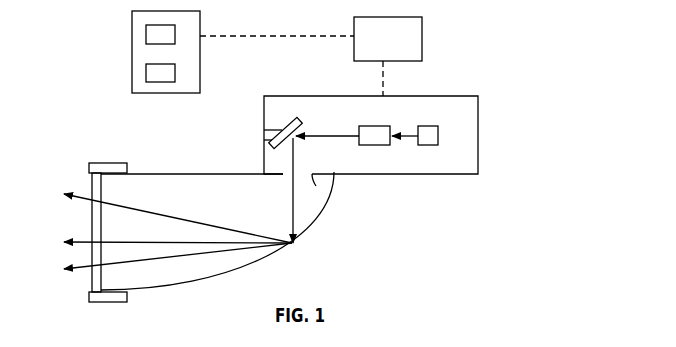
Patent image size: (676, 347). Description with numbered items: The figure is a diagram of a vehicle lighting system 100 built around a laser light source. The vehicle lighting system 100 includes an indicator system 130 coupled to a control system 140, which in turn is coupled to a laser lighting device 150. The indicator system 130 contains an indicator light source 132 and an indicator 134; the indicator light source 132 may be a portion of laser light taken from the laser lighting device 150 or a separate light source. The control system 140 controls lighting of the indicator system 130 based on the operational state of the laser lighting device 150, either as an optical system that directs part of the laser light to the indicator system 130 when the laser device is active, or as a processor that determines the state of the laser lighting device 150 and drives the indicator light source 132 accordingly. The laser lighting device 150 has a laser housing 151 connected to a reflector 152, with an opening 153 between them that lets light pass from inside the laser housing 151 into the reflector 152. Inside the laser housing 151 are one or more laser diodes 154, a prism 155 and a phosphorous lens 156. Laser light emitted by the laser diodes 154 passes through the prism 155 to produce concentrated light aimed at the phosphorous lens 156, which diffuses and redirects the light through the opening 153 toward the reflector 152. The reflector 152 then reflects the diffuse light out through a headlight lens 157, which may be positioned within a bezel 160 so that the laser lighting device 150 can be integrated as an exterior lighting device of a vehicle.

The vehicle lighting system 100 is at (533, 65).
The indicator system 130 is at (132, 72).
The indicator light source 132 is at (176, 26).
The indicator 134 is at (176, 64).
The control system 140 is at (423, 38).
The laser lighting device 150 is at (531, 122).
The laser housing 151 is at (479, 125).
The reflector 152 is at (308, 229).
The opening 153 is at (314, 178).
The laser diodes 154 is at (426, 146).
The prism 155 is at (372, 146).
The phosphorous lens 156 is at (287, 116).
The headlight lens 157 is at (92, 185).
The bezel 160 is at (128, 300).